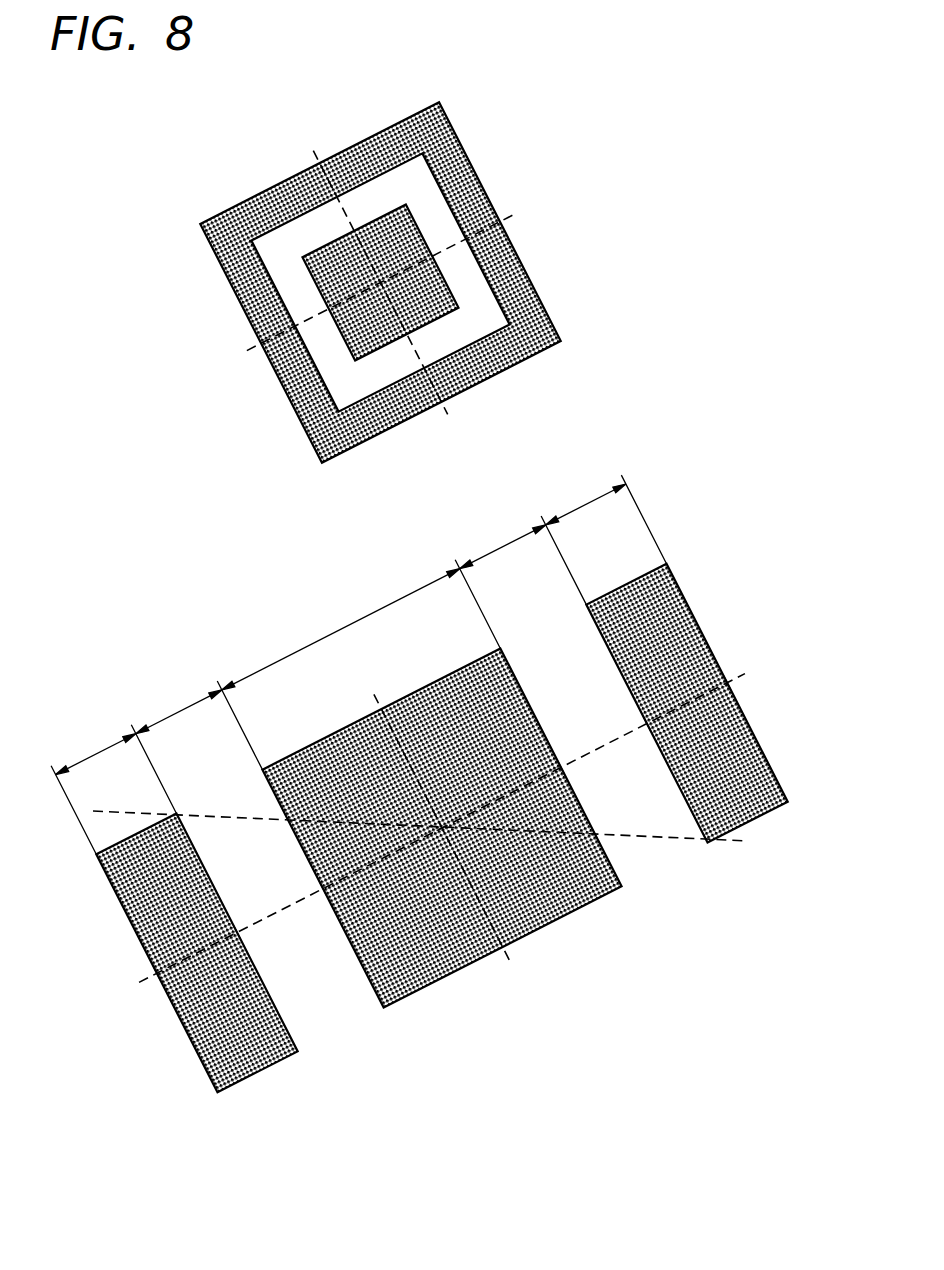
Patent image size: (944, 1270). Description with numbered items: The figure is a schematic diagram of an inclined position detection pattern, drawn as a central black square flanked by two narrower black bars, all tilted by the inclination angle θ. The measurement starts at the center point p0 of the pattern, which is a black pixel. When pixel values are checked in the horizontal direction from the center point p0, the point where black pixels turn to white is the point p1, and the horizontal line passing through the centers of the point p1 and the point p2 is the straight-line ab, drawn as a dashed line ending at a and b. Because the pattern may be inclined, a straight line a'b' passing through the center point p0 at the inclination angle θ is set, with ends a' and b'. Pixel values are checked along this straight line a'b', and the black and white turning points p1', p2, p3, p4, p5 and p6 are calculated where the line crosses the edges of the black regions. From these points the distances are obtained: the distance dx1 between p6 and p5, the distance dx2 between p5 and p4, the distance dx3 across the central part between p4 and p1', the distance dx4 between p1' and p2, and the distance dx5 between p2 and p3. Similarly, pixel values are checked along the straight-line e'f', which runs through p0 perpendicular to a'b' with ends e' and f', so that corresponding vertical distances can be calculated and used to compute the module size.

The distance between points p6 and p5 dx1 is at (88, 740).
The distance between points p5 and p4 dx2 is at (171, 698).
The distance between points p4 and p1 dx3 is at (333, 615).
The distance between points p1 and p2 dx4 is at (495, 533).
The distance between points p2 and p3 dx5 is at (578, 491).
The center point of the position detection pattern p0 is at (434, 818).
The black-to-white turning point p1 is at (606, 809).
The black-to-white turning point on inclined line p1' is at (574, 741).
The white-to-black turning point p2 is at (639, 718).
The black-to-white turning point p3 is at (721, 672).
The turning point in the reverse direction p4 is at (316, 883).
The turning point in the reverse direction p5 is at (228, 921).
The turning point in the reverse direction p6 is at (148, 963).
The end of straight-line ab a is at (85, 809).
The end of straight-line ab b is at (759, 842).
The end of straight line a'b' a' is at (121, 980).
The end of straight line a' b' is at (760, 668).
The end of straight-line e'f' e' is at (517, 970).
The end of straight-line e' f' is at (370, 687).